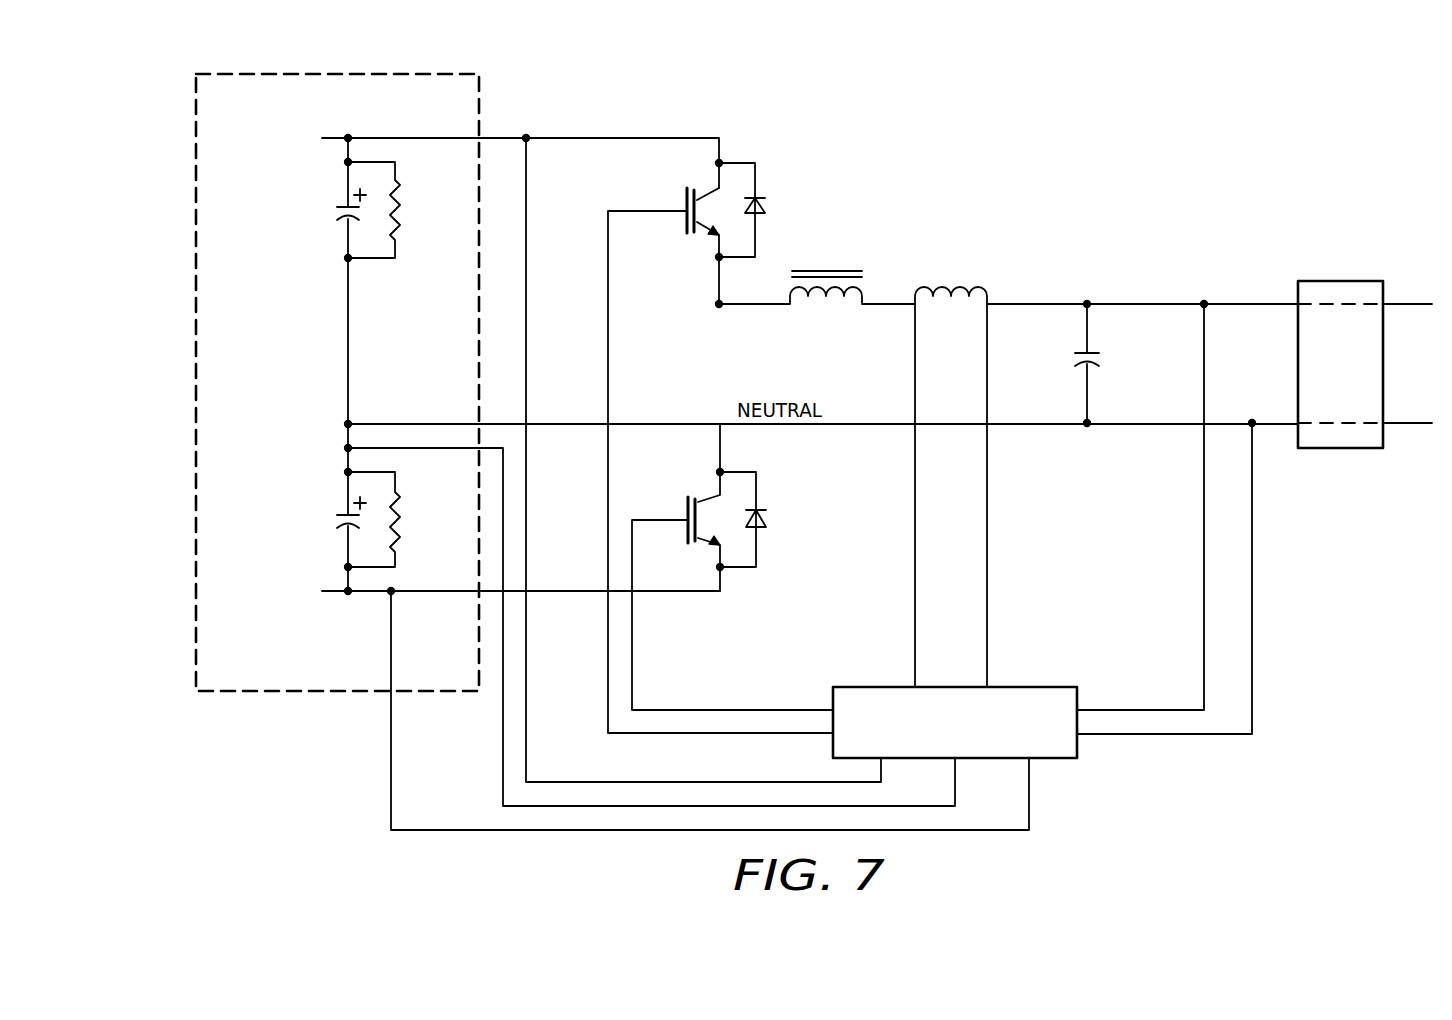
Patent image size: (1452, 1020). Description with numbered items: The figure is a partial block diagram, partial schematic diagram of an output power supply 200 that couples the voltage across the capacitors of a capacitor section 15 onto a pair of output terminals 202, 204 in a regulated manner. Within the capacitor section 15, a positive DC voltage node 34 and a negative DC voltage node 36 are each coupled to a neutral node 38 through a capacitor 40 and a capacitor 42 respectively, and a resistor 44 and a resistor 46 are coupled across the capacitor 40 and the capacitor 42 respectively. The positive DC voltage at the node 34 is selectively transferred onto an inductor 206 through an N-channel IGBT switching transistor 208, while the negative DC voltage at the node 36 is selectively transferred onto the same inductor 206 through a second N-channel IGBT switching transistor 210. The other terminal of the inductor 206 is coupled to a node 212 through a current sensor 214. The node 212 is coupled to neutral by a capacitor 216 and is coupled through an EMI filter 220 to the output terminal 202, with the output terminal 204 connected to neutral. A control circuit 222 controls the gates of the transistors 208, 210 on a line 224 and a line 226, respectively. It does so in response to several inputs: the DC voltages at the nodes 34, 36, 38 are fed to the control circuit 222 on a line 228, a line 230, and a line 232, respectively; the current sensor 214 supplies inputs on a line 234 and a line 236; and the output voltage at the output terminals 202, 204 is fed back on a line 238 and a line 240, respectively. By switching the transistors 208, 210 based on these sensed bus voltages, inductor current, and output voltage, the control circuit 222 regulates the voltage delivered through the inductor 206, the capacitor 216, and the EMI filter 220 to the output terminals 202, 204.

The capacitor section 15 is at (196, 371).
The positive DC voltage node 34 is at (442, 137).
The negative DC voltage node 36 is at (442, 593).
The neutral node 38 is at (348, 335).
The capacitor 40 is at (337, 209).
The capacitor 42 is at (337, 519).
The resistor 44 is at (400, 203).
The resistor 46 is at (405, 518).
The output power supply 200 is at (947, 126).
The output terminal 202 is at (1404, 303).
The output terminal 204 is at (1407, 424).
The inductor 206 is at (827, 270).
The N-channel IGBT switching transistor 208 is at (685, 202).
The N-channel IGBT switching transistor 210 is at (680, 508).
The node 212 is at (1037, 303).
The current sensor 214 is at (952, 287).
The capacitor 216 is at (1100, 362).
The EMI filter 220 is at (1341, 280).
The control circuit 222 is at (1050, 760).
The line 224 is at (608, 306).
The line 226 is at (633, 637).
The line 228 is at (528, 686).
The line 230 is at (391, 764).
The line 232 is at (503, 740).
The line 234 is at (915, 547).
The line 236 is at (987, 551).
The line 238 is at (1204, 555).
The line 240 is at (1252, 568).